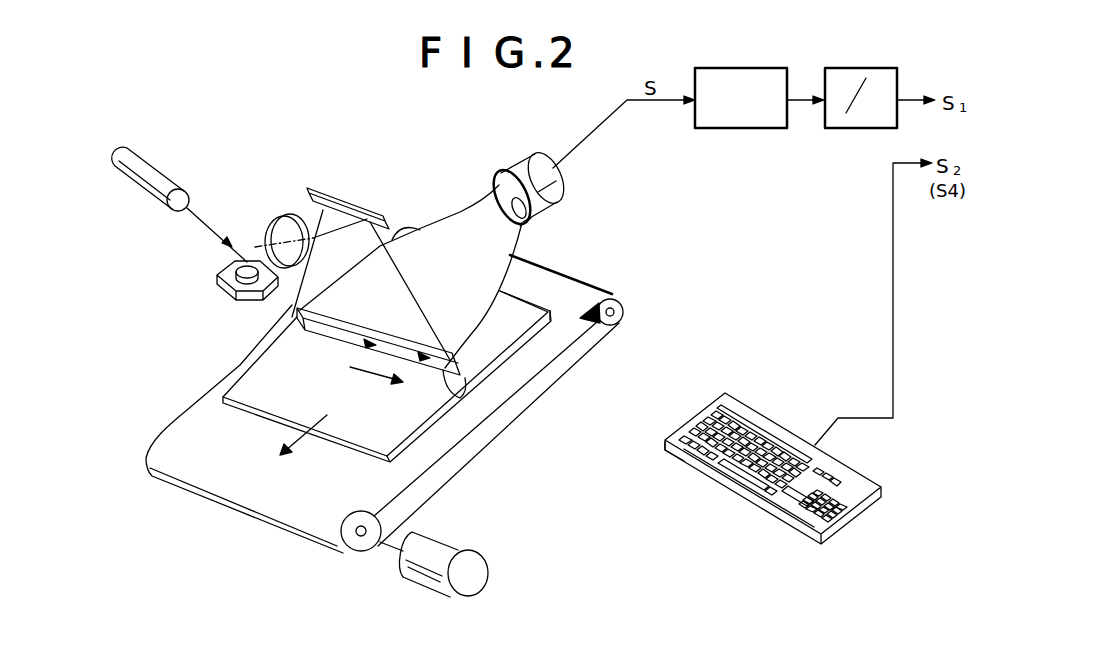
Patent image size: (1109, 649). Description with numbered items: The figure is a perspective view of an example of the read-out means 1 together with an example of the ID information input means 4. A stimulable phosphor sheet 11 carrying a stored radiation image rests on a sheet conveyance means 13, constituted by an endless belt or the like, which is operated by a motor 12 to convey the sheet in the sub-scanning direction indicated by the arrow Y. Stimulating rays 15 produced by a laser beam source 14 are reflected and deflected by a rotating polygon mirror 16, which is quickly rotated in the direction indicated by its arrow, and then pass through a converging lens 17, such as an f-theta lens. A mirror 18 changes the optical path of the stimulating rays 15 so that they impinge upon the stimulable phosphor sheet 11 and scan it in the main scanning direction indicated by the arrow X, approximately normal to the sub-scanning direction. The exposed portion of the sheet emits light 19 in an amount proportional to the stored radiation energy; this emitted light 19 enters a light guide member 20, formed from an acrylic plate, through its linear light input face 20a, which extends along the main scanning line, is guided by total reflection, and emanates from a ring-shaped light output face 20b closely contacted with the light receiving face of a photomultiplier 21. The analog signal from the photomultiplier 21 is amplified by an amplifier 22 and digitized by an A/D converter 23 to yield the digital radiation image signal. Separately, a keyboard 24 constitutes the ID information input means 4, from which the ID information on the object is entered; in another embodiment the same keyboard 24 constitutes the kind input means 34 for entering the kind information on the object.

The read-out means 1 is at (349, 126).
The stimulable phosphor sheet 11 is at (407, 408).
The motor 12 is at (442, 543).
The sheet conveyance means 13 is at (368, 472).
The laser beam source 14 is at (158, 172).
The stimulating rays 15 is at (200, 218).
The rotating polygon mirror 16 is at (217, 283).
The converging lens 17 is at (273, 218).
The mirror 18 is at (363, 190).
The emitted light 19 is at (320, 332).
The light guide member 20 is at (452, 232).
The linear light input face 20a is at (440, 372).
The ring-shaped light output face 20b is at (532, 216).
The photomultiplier 21 is at (523, 168).
The amplifier 22 is at (740, 68).
The A/D converter 23 is at (850, 68).
The ID information input means 4 is at (772, 393).
The kind input means 34 is at (763, 463).
The keyboard 24 is at (690, 444).